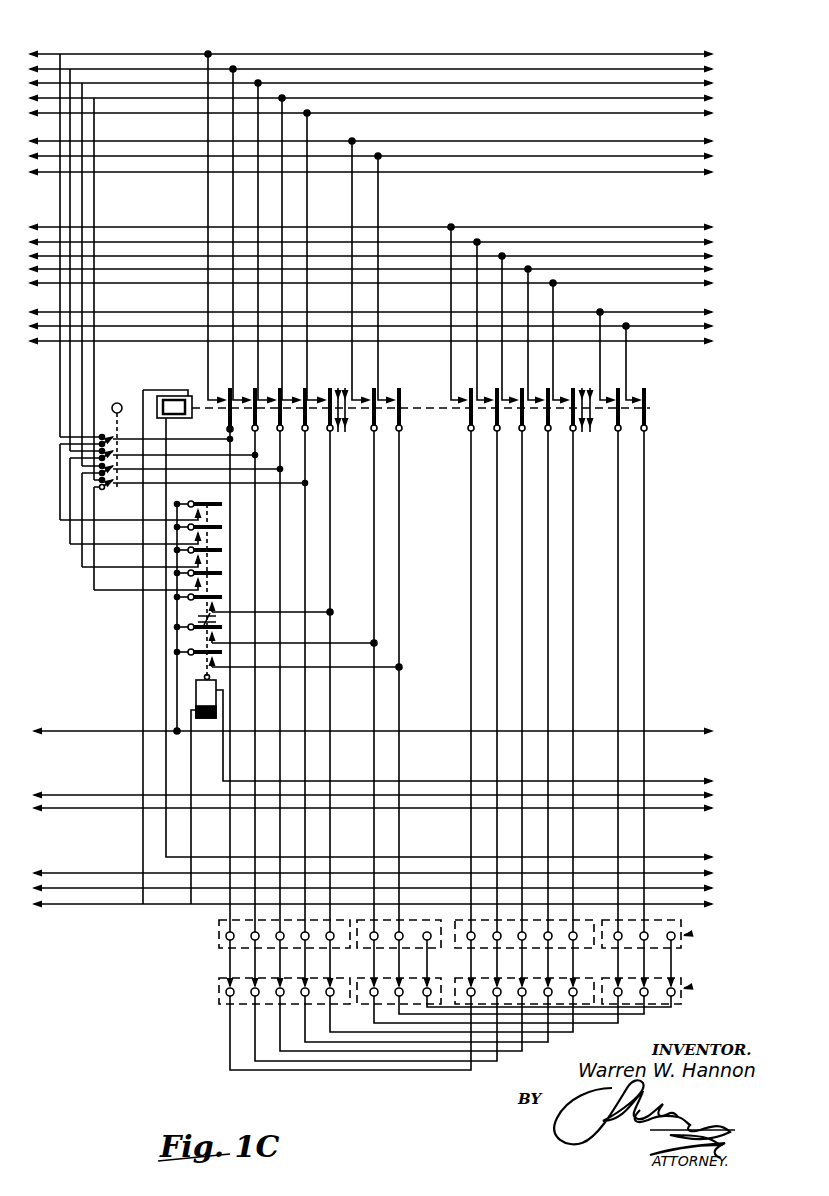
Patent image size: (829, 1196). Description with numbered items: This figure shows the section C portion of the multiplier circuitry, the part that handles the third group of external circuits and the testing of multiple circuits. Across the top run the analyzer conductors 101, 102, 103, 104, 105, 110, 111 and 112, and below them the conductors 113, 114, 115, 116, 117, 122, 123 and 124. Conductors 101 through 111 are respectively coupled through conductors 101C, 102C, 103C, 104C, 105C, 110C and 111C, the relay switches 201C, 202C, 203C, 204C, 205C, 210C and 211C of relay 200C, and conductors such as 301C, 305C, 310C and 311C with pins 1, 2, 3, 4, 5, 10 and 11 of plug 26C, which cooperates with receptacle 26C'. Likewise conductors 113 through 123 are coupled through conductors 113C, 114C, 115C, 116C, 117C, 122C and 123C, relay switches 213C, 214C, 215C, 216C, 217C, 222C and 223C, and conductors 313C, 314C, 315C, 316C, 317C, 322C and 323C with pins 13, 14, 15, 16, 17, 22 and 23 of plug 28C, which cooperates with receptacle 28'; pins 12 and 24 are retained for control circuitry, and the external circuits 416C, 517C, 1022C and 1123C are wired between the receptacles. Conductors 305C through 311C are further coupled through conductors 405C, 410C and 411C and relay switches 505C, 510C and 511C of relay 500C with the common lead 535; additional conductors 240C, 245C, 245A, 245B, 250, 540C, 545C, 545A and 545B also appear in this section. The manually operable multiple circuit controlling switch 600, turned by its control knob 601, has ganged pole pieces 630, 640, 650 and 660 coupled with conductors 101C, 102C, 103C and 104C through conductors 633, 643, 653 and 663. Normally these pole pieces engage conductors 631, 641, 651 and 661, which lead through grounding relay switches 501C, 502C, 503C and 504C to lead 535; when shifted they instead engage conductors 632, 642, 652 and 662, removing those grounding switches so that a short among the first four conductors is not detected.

The conductor 101 is at (287, 52).
The conductor 102 is at (287, 67).
The conductor 103 is at (290, 81).
The conductor 104 is at (296, 96).
The conductor 105 is at (313, 111).
The conductor 110 is at (402, 139).
The conductor 111 is at (407, 154).
The conductor 112 is at (410, 170).
The conductor 113 is at (528, 225).
The conductor 114 is at (542, 240).
The conductor 115 is at (557, 254).
The conductor 116 is at (577, 267).
The conductor 117 is at (587, 281).
The conductor 122 is at (617, 310).
The conductor 123 is at (637, 324).
The conductor 124 is at (647, 339).
The conductor 101C is at (207, 201).
The conductor 102C is at (238, 210).
The conductor 103C is at (262, 222).
The conductor 104C is at (288, 200).
The conductor 105C is at (315, 215).
The conductor 110C is at (358, 207).
The conductor 111C is at (380, 200).
The conductor 113C is at (451, 370).
The conductor 114C is at (477, 373).
The conductor 115C is at (502, 373).
The conductor 116C is at (531, 364).
The conductor 117C is at (557, 363).
The conductor 122C is at (600, 373).
The conductor 123C is at (630, 361).
The relay 200C is at (154, 395).
The relay switch 201C is at (215, 660).
The relay switch 202C is at (251, 427).
The relay switch 203C is at (277, 432).
The relay switch 204C is at (320, 374).
The relay switch 205C is at (333, 390).
The relay switch 210C is at (372, 432).
The relay switch 211C is at (403, 434).
The relay switch 213C is at (470, 420).
The relay switch 214C is at (493, 430).
The relay switch 215C is at (518, 435).
The relay switch 216C is at (547, 429).
The relay switch 217C is at (569, 435).
The relay switch 222C is at (616, 429).
The relay switch 223C is at (648, 418).
The conductor 305C is at (330, 501).
The conductor 310C is at (372, 490).
The conductor 311C is at (399, 495).
The conductor 313C is at (470, 568).
The conductor 314C is at (496, 642).
The conductor 315C is at (523, 658).
The conductor 316C is at (550, 613).
The conductor 317C is at (573, 541).
The conductor 322C is at (617, 545).
The conductor 323C is at (647, 549).
The conductor 240C is at (140, 608).
The conductor 245C is at (165, 650).
The conductor 245A is at (60, 880).
The conductor 245B is at (58, 872).
The conductor 250 is at (56, 902).
The multiple circuit operation controlling switch 600 is at (129, 412).
The control knob 601 is at (114, 402).
The pole piece 630 is at (101, 434).
The pole piece 640 is at (106, 449).
The pole piece 650 is at (112, 464).
The pole piece 660 is at (118, 479).
The conductor 633 is at (176, 428).
The conductor 643 is at (176, 445).
The conductor 653 is at (176, 459).
The conductor 663 is at (176, 474).
The conductor 631 is at (59, 475).
The conductor 632 is at (59, 395).
The conductor 641 is at (70, 534).
The conductor 642 is at (68, 364).
The conductor 651 is at (82, 552).
The conductor 652 is at (84, 380).
The conductor 661 is at (94, 576).
The conductor 662 is at (94, 361).
The conductor 301C is at (223, 501).
The relay switch 505C is at (199, 604).
The relay switch 510C is at (199, 634).
The relay switch 511C is at (199, 659).
The relay switch 501C is at (148, 515).
The relay switch 502C is at (153, 538).
The relay switch 503C is at (159, 561).
The relay switch 504C is at (165, 584).
The conductor 405C is at (324, 610).
The conductor 410C is at (324, 641).
The conductor 411C is at (338, 668).
The relay 500C is at (190, 692).
The conductor 535 is at (68, 729).
The conductor 540C is at (192, 778).
The conductor 545C is at (222, 753).
The conductor 545A is at (62, 815).
The conductor 545B is at (60, 794).
The plug 26C is at (429, 935).
The receptacle 26C' is at (429, 991).
The plug 28C is at (704, 933).
The receptacle 28' is at (701, 986).
The pin 1 is at (233, 941).
The pin 2 is at (258, 941).
The pin 3 is at (283, 941).
The pin 4 is at (308, 941).
The pin 5 is at (333, 941).
The pin 10 is at (377, 941).
The pin 11 is at (402, 941).
The terminal 12 is at (430, 941).
The pin 13 is at (474, 941).
The pin 14 is at (500, 941).
The pin 15 is at (525, 941).
The pin 16 is at (551, 941).
The pin 17 is at (576, 941).
The pin 22 is at (621, 941).
The pin 23 is at (647, 941).
The terminal 24 is at (674, 941).
The conductor 416C is at (357, 1052).
The conductor 517C is at (336, 1030).
The conductor 1022C is at (599, 1023).
The conductor 1123C is at (649, 1013).